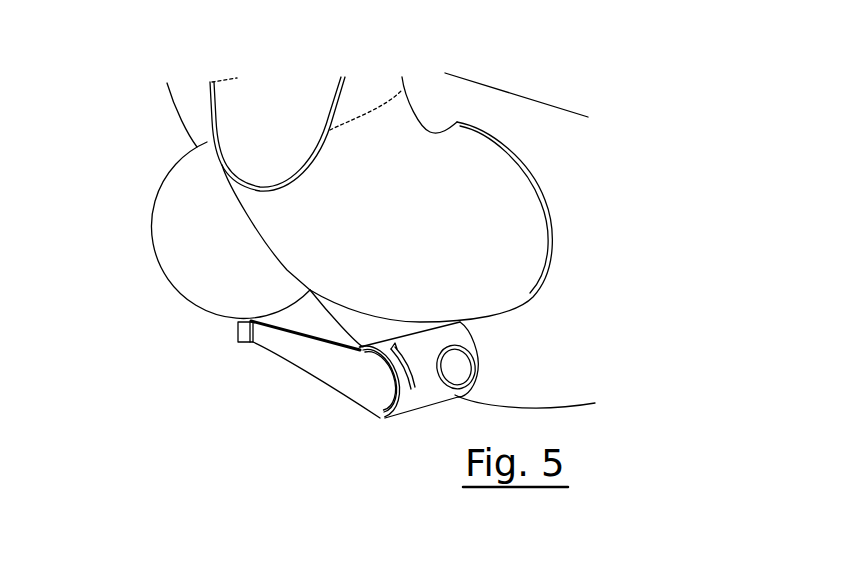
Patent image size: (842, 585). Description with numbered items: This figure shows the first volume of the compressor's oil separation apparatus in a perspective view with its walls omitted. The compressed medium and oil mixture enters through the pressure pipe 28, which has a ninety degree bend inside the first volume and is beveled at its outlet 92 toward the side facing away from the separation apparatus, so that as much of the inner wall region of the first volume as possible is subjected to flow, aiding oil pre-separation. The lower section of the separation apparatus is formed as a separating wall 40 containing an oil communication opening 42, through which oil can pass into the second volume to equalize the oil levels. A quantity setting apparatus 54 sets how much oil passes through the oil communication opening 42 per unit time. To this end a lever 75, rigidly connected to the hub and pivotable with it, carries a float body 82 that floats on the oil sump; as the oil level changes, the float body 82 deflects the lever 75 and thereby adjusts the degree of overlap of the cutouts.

The pressure pipe 28 is at (383, 125).
The separating wall 40 is at (553, 162).
The oil communication opening 42 is at (455, 363).
The quantity setting apparatus 54 is at (387, 428).
The lever 75 is at (310, 365).
The float body 82 is at (175, 223).
The outlet 92 is at (278, 113).